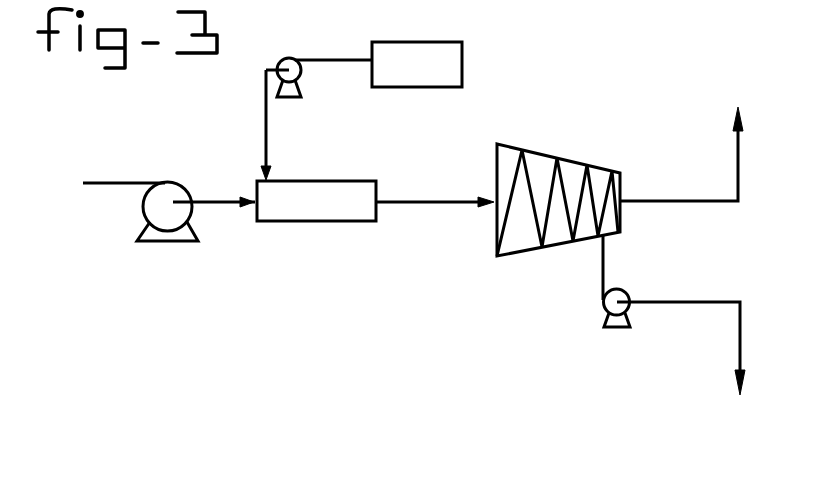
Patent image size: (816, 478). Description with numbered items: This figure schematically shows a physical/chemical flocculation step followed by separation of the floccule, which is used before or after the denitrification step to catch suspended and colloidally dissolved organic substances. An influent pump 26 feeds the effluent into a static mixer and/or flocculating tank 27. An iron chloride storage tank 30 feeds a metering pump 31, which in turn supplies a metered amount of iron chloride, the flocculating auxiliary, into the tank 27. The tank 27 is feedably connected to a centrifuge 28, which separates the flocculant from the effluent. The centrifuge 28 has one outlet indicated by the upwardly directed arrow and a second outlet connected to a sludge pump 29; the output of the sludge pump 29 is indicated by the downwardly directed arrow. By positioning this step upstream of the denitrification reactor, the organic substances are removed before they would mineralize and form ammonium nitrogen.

The influent pump 26 is at (153, 237).
The static mixer and/or flocculating tank 27 is at (342, 208).
The centrifuge 28 is at (529, 240).
The sludge pump 29 is at (618, 328).
The iron chloride storage tank 30 is at (440, 52).
The metering pump 31 is at (314, 22).